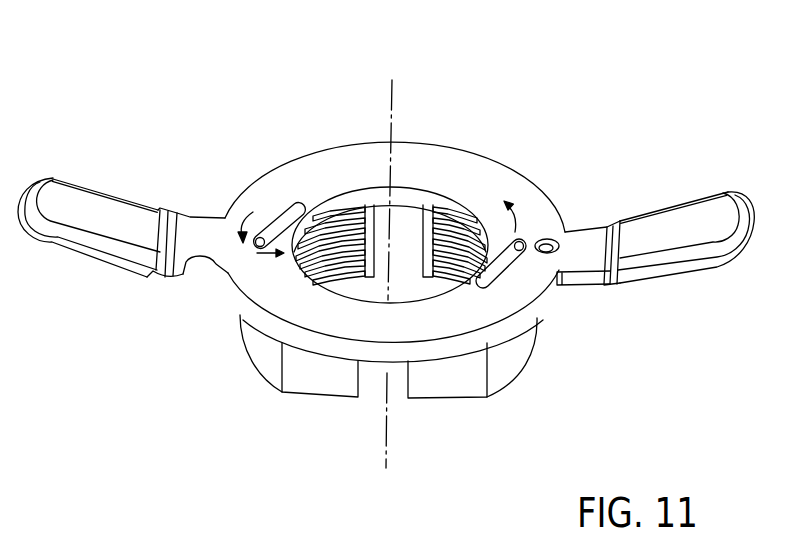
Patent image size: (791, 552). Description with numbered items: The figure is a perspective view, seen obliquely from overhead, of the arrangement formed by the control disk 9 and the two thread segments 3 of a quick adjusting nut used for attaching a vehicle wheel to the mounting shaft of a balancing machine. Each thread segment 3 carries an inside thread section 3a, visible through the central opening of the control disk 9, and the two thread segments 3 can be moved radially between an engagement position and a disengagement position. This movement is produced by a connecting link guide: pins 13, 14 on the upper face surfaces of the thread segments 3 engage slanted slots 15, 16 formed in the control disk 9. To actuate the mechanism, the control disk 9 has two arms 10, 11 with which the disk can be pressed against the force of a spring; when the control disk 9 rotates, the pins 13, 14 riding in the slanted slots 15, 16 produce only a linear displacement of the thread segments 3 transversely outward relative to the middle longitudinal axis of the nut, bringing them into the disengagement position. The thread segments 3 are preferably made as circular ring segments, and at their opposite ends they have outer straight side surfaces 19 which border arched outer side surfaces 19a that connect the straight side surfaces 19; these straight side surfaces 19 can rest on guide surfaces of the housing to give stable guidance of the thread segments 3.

The thread segment 3 is at (412, 385).
The inside thread section 3a is at (338, 215).
The control disk 9 is at (347, 158).
The arm 10 is at (188, 222).
The arm 11 is at (598, 240).
The pin 13 is at (263, 228).
The pin 14 is at (525, 237).
The slanted slot 15 is at (285, 218).
The slanted slot 16 is at (495, 262).
The straight side surface 19 is at (318, 375).
The arched outer side surface 19a is at (260, 342).